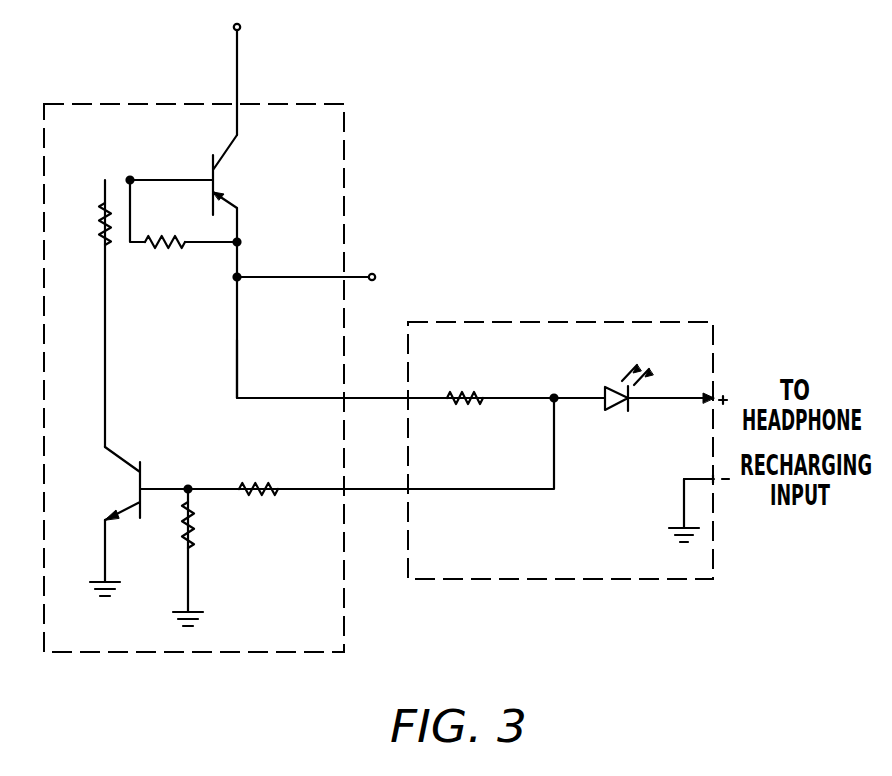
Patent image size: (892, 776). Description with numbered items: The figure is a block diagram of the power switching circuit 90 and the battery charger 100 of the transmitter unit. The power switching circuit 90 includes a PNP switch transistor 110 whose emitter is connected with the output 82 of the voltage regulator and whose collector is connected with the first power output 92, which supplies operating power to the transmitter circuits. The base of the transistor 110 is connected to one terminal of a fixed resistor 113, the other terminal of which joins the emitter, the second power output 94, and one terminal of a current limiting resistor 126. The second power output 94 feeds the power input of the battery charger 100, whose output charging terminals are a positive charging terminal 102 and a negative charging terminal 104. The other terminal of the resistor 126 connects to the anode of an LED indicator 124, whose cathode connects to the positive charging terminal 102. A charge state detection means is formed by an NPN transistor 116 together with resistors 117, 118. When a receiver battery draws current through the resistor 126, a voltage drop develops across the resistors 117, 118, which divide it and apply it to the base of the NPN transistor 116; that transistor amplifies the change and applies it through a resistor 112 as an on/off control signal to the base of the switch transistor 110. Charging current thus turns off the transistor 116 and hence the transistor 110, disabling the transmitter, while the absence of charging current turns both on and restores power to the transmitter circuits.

The first power output 92 is at (241, 27).
The power switching circuit 90 is at (347, 137).
The PNP switch transistor 110 is at (232, 178).
The resistor 112 is at (103, 205).
The fixed resistor 113 is at (177, 248).
The second power output 94 is at (238, 363).
The output of the voltage regulator 82 is at (443, 275).
The NPN transistor 116 is at (143, 478).
The resistor 117 is at (192, 525).
The resistor 118 is at (268, 492).
The battery charger 100 is at (668, 322).
The current limiting resistor 126 is at (470, 394).
The LED indicator 124 is at (617, 412).
The positive charging terminal 102 is at (698, 398).
The negative charging terminal 104 is at (700, 482).